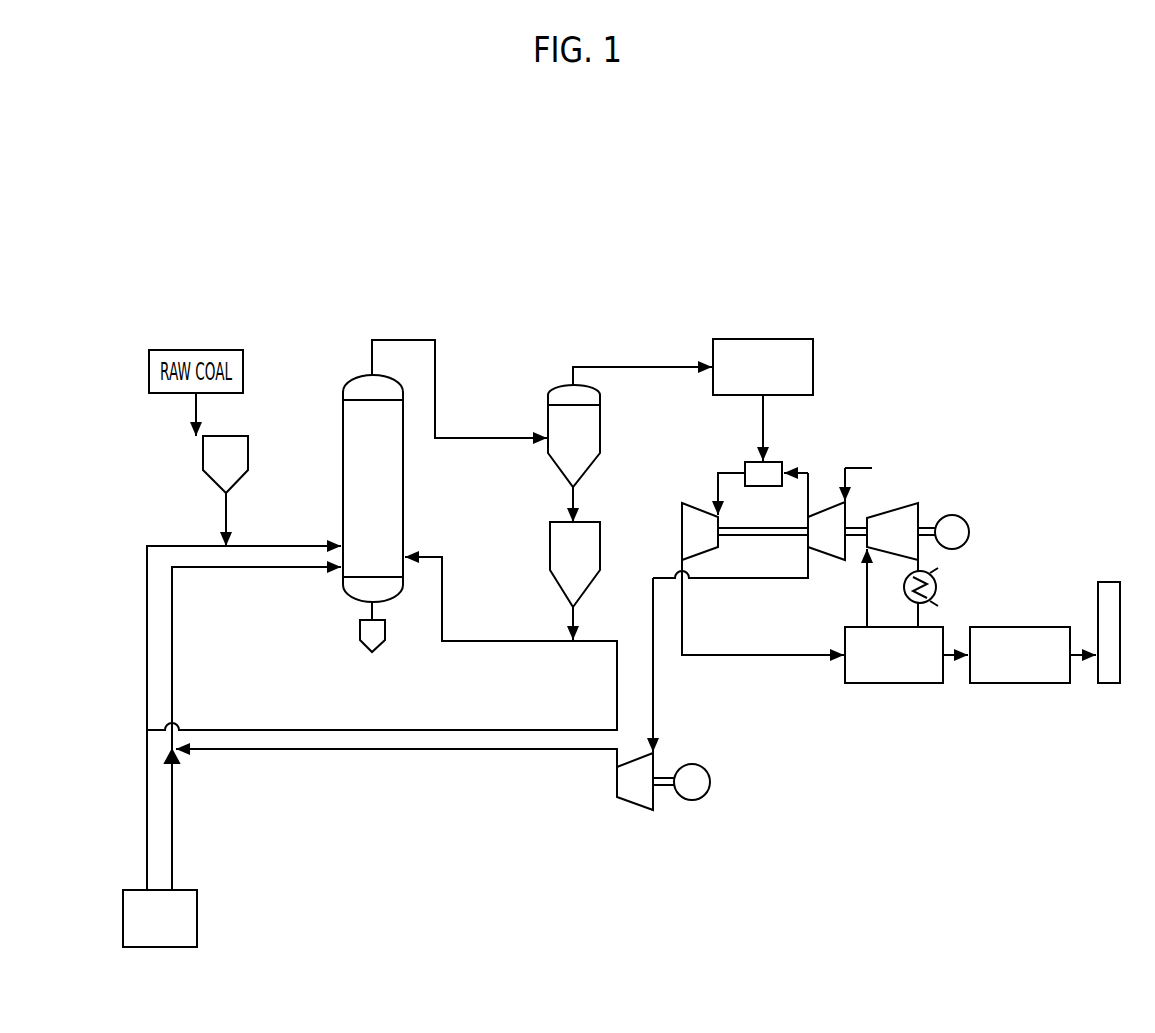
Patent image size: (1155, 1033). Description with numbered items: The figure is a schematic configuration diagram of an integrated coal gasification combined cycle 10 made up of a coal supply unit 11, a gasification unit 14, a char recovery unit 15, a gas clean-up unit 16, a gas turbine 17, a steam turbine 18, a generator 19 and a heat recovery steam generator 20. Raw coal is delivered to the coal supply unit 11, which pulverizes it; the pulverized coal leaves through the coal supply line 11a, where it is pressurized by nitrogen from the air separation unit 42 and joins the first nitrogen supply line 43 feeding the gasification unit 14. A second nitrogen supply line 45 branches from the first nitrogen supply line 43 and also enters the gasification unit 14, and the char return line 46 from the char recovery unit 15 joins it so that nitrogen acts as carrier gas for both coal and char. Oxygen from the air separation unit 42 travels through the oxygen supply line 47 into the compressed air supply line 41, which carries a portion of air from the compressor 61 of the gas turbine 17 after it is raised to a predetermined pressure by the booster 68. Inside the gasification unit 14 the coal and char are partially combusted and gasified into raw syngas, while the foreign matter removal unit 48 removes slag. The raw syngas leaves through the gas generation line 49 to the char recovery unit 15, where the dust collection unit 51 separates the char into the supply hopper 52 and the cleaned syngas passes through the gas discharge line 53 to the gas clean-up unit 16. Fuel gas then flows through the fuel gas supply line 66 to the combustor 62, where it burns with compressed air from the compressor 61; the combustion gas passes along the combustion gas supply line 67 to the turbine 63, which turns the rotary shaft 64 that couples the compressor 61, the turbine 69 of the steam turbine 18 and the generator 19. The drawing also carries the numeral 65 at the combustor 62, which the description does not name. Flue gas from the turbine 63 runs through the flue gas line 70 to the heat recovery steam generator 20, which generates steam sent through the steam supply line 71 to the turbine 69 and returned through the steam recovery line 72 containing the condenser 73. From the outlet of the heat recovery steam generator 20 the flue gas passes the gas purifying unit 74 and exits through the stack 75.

The integrated coal gasification combined cycle 10 is at (480, 205).
The coal supply unit 11 is at (200, 455).
The coal supply line 11a is at (225, 512).
The gasification unit 14 is at (341, 377).
The char recovery unit 15 is at (566, 383).
The gas clean-up unit 16 is at (785, 337).
The gas turbine 17 is at (750, 420).
The steam turbine 18 is at (938, 480).
The generator 19 is at (968, 525).
The heat recovery steam generator 20 is at (925, 686).
The compressed air supply line 41 is at (392, 750).
The air separation unit 42 is at (123, 908).
The first nitrogen supply line 43 is at (147, 777).
The second nitrogen supply line 45 is at (212, 730).
The char return line 46 is at (578, 612).
The oxygen supply line 47 is at (172, 777).
The foreign matter removal unit 48 is at (363, 647).
The gas generation line 49 is at (400, 339).
The dust collection unit 51 is at (553, 464).
The supply hopper 52 is at (549, 552).
The gas discharge line 53 is at (633, 366).
The compressor 61 is at (838, 560).
The combustor 62 is at (781, 461).
The turbine 63 is at (682, 510).
The rotary shaft 64 is at (765, 538).
The combustion gas supply line 65 is at (810, 490).
The fuel gas supply line 66 is at (767, 415).
The combustion gas supply line 67 is at (722, 472).
The booster 68 is at (633, 806).
The turbine 69 is at (900, 508).
The flue gas line 70 is at (763, 657).
The steam supply line 71 is at (866, 612).
The steam recovery line 72 is at (921, 613).
The condenser 73 is at (935, 579).
The gas purifying unit 74 is at (1030, 627).
The stack 75 is at (1107, 582).